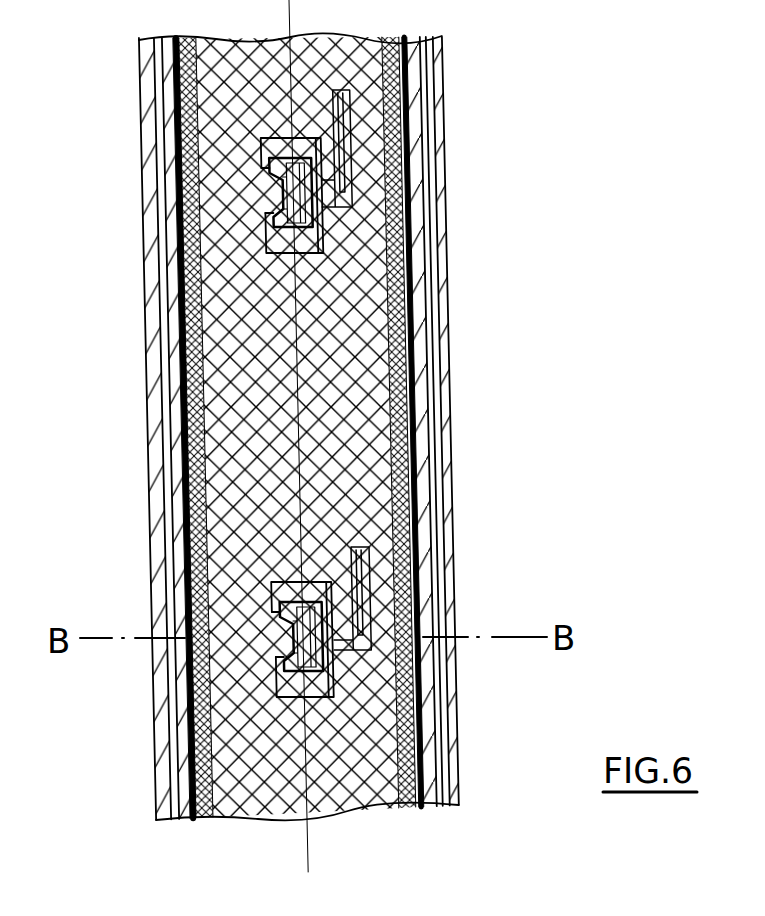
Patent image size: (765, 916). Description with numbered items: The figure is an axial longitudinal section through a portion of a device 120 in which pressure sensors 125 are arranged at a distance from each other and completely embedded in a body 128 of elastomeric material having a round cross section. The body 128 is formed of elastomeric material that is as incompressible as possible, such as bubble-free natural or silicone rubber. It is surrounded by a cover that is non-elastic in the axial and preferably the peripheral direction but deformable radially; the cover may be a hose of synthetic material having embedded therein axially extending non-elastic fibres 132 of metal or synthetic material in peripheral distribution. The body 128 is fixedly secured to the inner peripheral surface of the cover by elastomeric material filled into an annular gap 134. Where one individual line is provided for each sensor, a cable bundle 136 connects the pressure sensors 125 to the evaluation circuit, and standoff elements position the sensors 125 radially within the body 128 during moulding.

The device 120 is at (323, 436).
The pressure sensors 125 is at (252, 203).
The body 128 is at (262, 323).
The non-elastic fibres 132 is at (166, 567).
The annular gap 134 is at (178, 436).
The cable bundle 136 is at (436, 558).